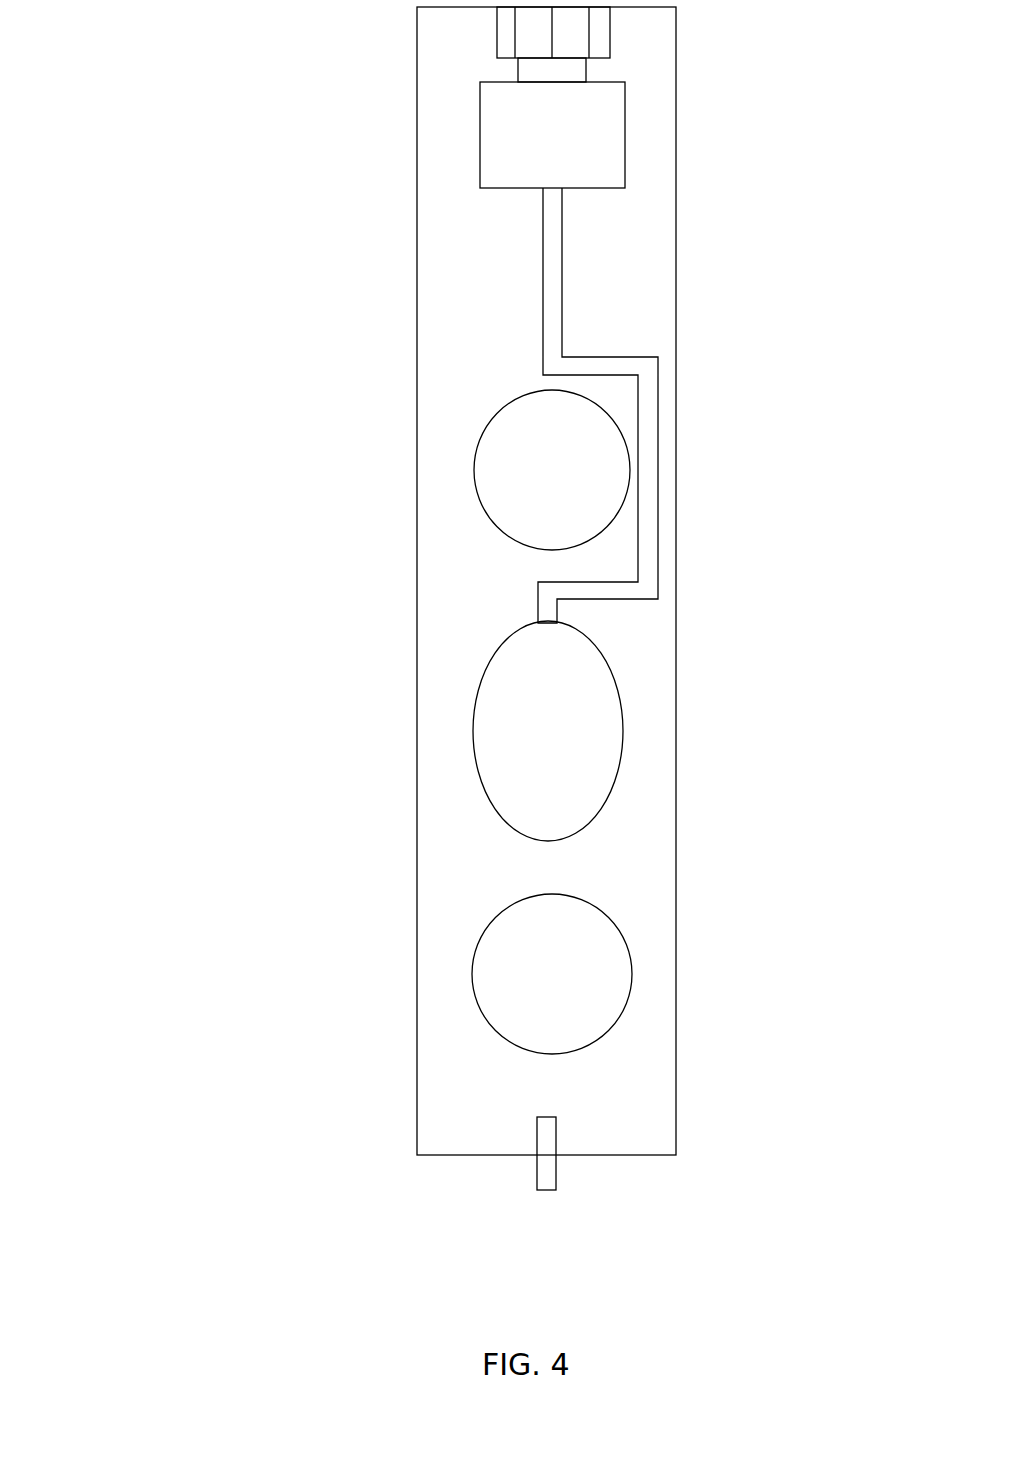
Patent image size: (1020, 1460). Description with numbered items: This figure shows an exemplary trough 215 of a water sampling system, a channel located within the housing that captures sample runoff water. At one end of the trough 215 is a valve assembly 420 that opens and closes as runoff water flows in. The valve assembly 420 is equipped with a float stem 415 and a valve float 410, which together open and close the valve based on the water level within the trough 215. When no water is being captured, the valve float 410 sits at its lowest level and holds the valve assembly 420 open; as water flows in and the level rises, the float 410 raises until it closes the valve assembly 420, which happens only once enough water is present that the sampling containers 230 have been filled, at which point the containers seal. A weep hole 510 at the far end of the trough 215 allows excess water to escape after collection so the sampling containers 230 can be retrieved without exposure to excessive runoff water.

The trough 215 is at (378, 268).
The valve assembly 420 is at (588, 138).
The float stem 415 is at (643, 537).
The sampling containers 230 is at (509, 722).
The valve float 410 is at (547, 729).
The weep hole 510 is at (552, 1160).